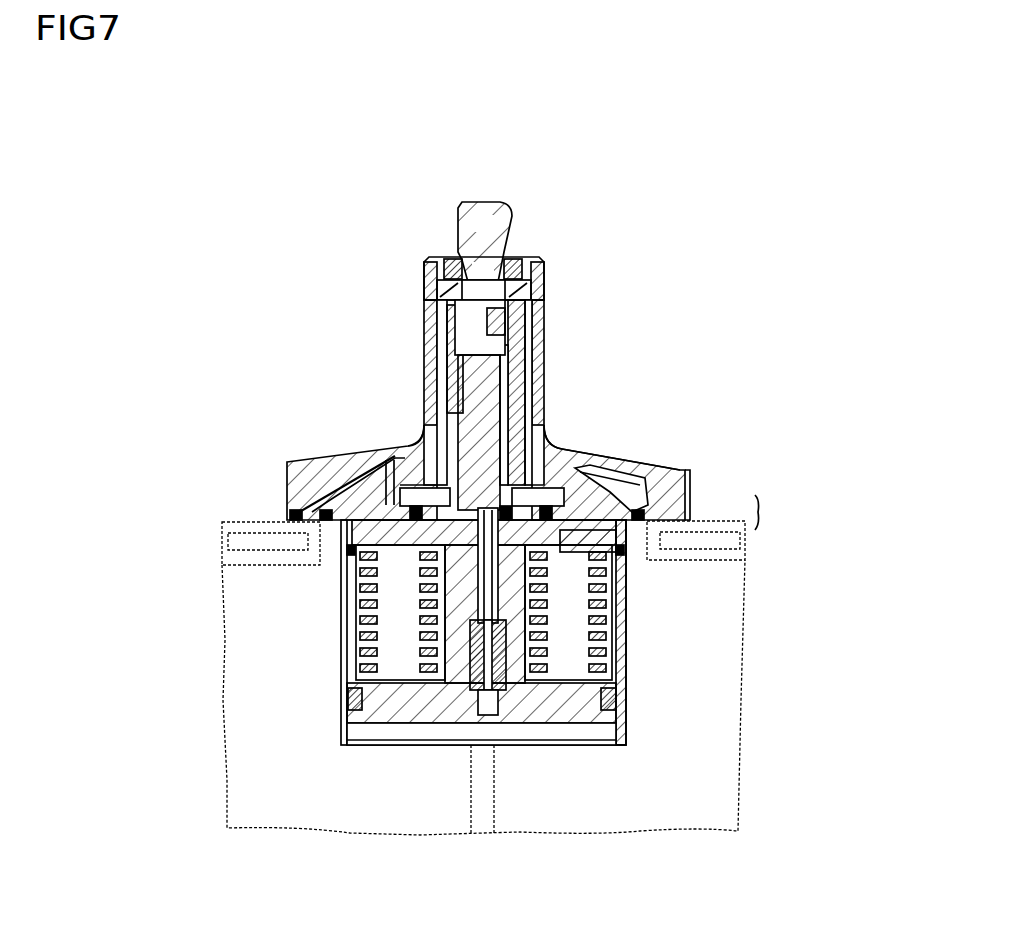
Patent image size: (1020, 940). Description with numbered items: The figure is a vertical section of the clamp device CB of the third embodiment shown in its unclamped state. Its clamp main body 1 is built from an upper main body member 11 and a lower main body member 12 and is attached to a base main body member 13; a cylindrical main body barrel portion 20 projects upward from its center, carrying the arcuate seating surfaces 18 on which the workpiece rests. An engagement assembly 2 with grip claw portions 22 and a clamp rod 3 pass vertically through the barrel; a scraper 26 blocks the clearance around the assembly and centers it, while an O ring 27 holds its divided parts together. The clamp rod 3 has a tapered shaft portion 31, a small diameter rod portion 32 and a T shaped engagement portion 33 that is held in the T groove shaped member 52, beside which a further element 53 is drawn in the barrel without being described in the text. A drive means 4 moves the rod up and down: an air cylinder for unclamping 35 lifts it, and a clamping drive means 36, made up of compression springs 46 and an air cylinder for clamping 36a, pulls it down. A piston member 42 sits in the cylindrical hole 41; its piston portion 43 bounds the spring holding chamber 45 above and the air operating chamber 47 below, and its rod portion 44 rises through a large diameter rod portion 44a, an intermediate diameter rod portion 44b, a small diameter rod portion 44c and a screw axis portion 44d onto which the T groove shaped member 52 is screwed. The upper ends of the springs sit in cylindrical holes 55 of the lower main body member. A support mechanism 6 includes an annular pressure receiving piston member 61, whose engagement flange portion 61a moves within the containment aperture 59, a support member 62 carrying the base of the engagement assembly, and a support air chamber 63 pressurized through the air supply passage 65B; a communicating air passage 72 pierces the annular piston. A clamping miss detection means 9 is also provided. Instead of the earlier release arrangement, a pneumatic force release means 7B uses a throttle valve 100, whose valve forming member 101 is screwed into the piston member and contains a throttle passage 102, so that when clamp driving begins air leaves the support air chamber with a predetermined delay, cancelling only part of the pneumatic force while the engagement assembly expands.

The clamp device CB is at (634, 168).
The clamp main body 1 is at (764, 512).
The engagement assembly 2 is at (520, 222).
The clamp rod 3 is at (503, 198).
The drive means 4 is at (358, 728).
The support mechanism 6 is at (362, 592).
The clamping miss detection means 9 is at (665, 470).
The upper main body member 11 is at (690, 502).
The lower main body member 12 is at (668, 538).
The base main body member 13 is at (744, 658).
The seating surfaces 18 is at (545, 260).
The main body barrel portion 20 is at (546, 355).
The grip claw portions 22 is at (514, 246).
The scraper 26 is at (451, 258).
The O ring 27 is at (446, 270).
The tapered shaft portion 31 is at (483, 224).
The small diameter rod portion 32 is at (483, 271).
The T shaped engagement portion 33 is at (480, 327).
The air cylinder for unclamping 35 is at (630, 742).
The clamping drive means 36 is at (312, 683).
The air cylinder for clamping 36a is at (356, 618).
The cylindrical hole 41 is at (624, 650).
The piston member 42 is at (383, 727).
The piston portion 43 is at (345, 720).
The rod portion 44 is at (620, 605).
The large diameter rod portion 44a is at (528, 648).
The intermediate diameter rod portion 44b is at (530, 575).
The small diameter rod portion 44c is at (547, 431).
The screw axis portion 44d is at (528, 400).
The spring holding chamber 45 is at (365, 648).
The compression springs 46 is at (362, 628).
The air operating chamber 47 is at (416, 730).
The T groove shaped member 52 is at (535, 380).
The outer sleeve 53 is at (535, 330).
The cylindrical holes 55 is at (625, 555).
The containment aperture 59 is at (590, 470).
The annular pressure receiving piston member 61 is at (398, 462).
The engagement flange portion 61a is at (385, 470).
The support member 62 is at (430, 347).
The support air chamber 63 is at (420, 548).
The air supply passage 65B is at (488, 506).
The communicating air passage 72 is at (416, 500).
The pneumatic force release means 7B is at (500, 715).
The throttle valve 100 is at (472, 660).
The valve forming member 101 is at (500, 718).
The throttle passage 102 is at (500, 690).